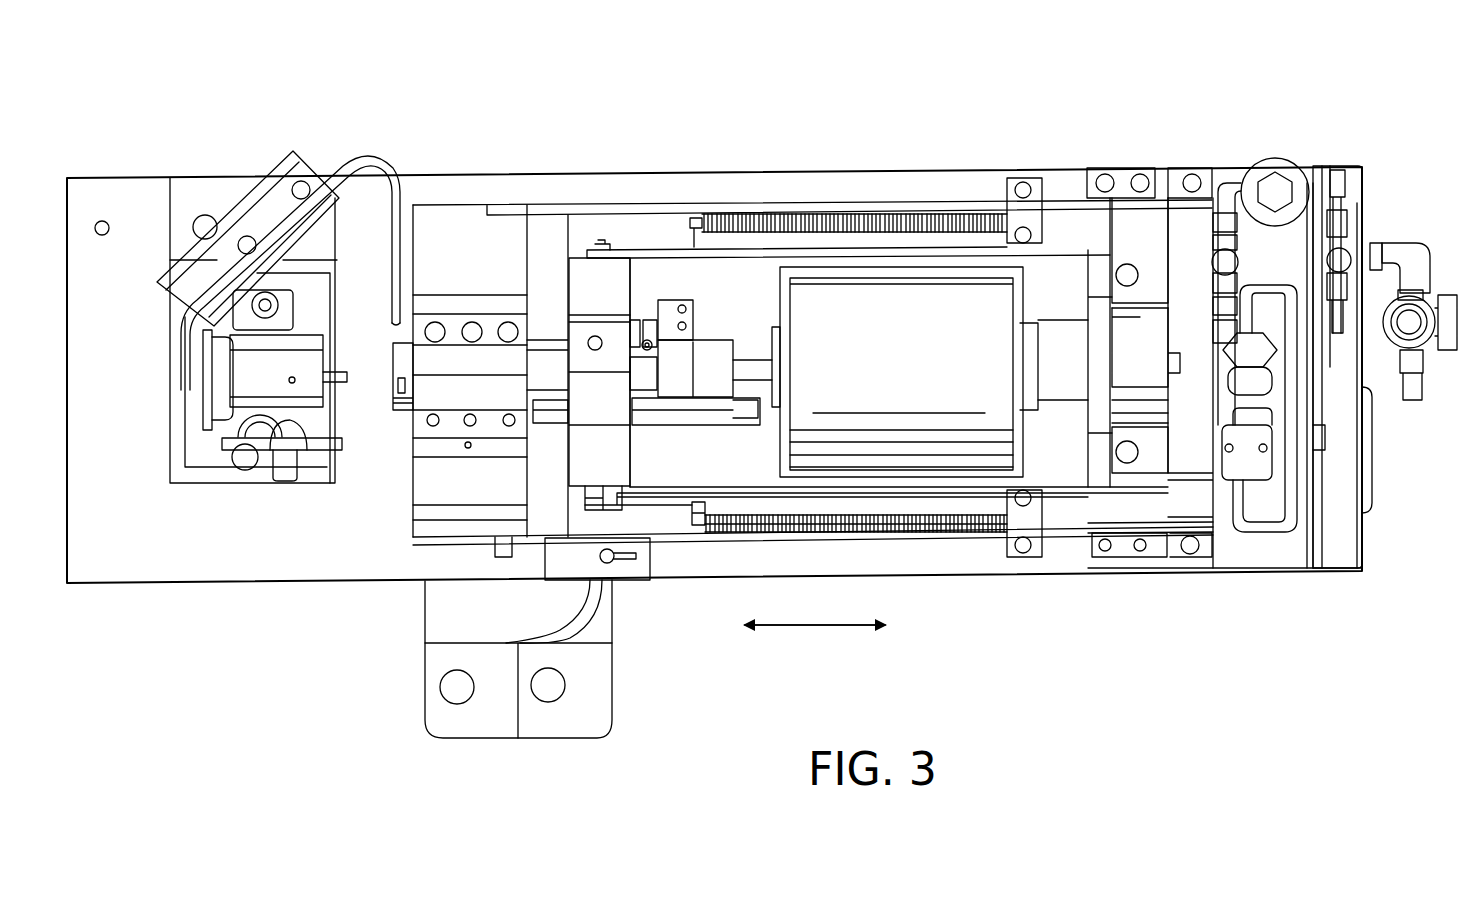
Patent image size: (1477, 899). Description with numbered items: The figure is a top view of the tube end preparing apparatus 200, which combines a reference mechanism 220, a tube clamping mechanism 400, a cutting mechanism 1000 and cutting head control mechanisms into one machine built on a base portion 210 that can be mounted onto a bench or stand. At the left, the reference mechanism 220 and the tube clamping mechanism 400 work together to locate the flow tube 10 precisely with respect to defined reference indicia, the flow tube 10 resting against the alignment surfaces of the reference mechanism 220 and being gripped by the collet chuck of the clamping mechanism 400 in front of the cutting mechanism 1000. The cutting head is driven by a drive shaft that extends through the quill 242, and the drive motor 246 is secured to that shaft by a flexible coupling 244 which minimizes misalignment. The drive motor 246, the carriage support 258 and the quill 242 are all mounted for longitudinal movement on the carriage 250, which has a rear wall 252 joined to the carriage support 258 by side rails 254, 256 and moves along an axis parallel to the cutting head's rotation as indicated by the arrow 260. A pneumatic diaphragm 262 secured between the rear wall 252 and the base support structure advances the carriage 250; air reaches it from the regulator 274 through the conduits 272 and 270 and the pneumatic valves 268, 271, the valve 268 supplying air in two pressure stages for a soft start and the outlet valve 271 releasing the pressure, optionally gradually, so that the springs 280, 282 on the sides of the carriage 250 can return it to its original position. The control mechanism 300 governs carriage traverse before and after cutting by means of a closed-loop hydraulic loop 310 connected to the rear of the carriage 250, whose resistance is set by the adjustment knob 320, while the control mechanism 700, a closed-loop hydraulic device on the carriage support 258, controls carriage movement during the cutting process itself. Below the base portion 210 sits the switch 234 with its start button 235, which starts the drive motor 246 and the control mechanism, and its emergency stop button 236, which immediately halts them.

The flow tube 10 is at (369, 160).
The tube end preparing apparatus 200 is at (833, 85).
The base portion 210 is at (690, 582).
The reference mechanism 220 is at (262, 163).
The switch 234 is at (425, 716).
The start button 235 is at (440, 688).
The emergency stop button 236 is at (558, 684).
The quill 242 is at (640, 370).
The flexible coupling 244 is at (712, 348).
The drive motor 246 is at (873, 295).
The carriage 250 is at (1056, 180).
The rear wall 252 is at (1097, 268).
The side rail 254 is at (921, 494).
The side rail 256 is at (988, 178).
The carriage support 258 is at (583, 273).
The arrow 260 is at (803, 629).
The pneumatic diaphragm 262 is at (1135, 352).
The pneumatic valve 268 is at (1248, 463).
The conduit 270 is at (1323, 215).
The outlet valve 271 is at (1263, 382).
The conduit 272 is at (1323, 405).
The regulator 274 is at (1425, 270).
The spring 280 is at (968, 532).
The spring 282 is at (822, 208).
The control mechanism 300 is at (1284, 243).
The closed-loop hydraulic loop 310 is at (1309, 190).
The adjustment knob 320 is at (1270, 190).
The tube clamping mechanism 400 is at (244, 502).
The control mechanism 700 is at (668, 432).
The cutting mechanism 1000 is at (401, 414).